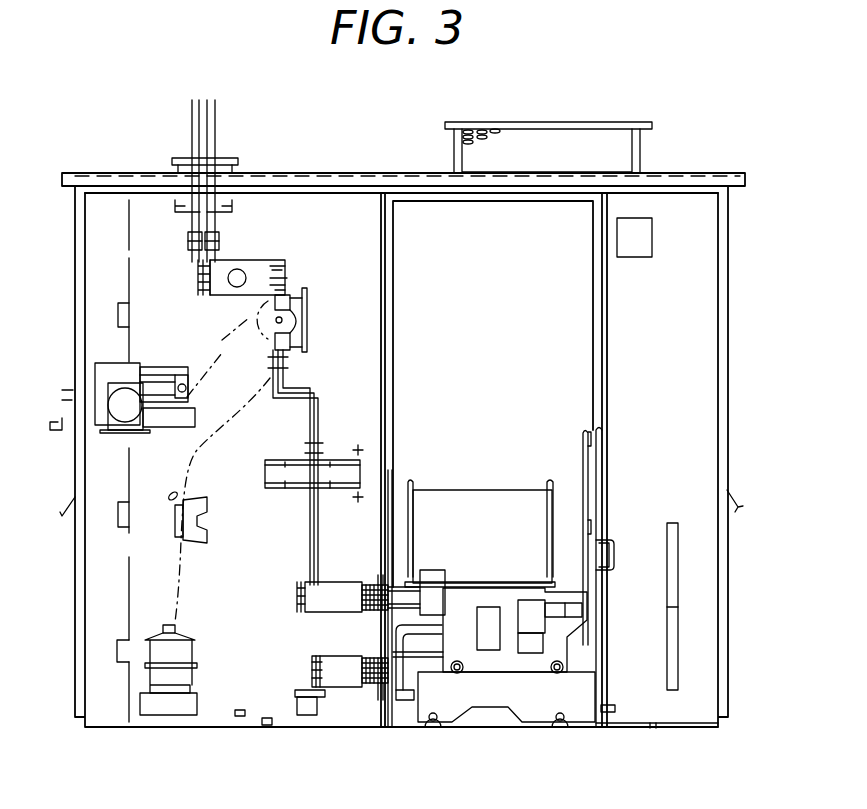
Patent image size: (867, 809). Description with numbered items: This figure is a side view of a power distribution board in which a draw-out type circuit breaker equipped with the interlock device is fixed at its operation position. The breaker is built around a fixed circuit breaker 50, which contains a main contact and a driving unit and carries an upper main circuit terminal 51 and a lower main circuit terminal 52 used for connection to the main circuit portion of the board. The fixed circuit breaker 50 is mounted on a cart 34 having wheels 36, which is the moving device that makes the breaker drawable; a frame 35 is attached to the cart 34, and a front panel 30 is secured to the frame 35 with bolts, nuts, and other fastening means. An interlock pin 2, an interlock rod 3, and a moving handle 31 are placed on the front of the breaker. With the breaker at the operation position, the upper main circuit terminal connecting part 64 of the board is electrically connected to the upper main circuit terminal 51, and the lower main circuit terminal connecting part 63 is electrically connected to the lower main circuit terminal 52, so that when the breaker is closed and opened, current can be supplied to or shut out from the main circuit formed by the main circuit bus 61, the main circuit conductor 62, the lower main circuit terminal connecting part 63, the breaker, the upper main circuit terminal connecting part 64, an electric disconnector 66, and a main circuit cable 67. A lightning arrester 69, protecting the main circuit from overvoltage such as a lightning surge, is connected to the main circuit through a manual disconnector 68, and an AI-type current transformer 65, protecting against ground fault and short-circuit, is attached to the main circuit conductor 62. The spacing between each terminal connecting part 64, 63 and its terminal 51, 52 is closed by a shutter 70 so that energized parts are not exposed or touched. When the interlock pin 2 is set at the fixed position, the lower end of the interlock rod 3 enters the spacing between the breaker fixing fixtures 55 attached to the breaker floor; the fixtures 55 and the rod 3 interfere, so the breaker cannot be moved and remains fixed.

The interlock pin 2 is at (601, 666).
The interlock rod 3 is at (590, 727).
The front panel 30 is at (602, 484).
The moving handle 31 is at (615, 540).
The cart 34 is at (497, 698).
The frame 35 is at (586, 636).
The wheels 36 is at (435, 727).
The fixed circuit breaker 50 is at (487, 498).
The upper main circuit terminal 51 is at (377, 575).
The lower main circuit terminal 52 is at (380, 686).
The breaker fixing fixtures 55 is at (632, 730).
The main circuit bus 61 is at (313, 672).
The main circuit conductor 62 is at (258, 263).
The lower main circuit terminal connecting part 63 is at (362, 660).
The upper main circuit terminal connecting part 64 is at (362, 583).
The AI-type current transformer 65 is at (322, 465).
The electric disconnector 66 is at (295, 297).
The main circuit cable 67 is at (215, 135).
The manual disconnector 68 is at (175, 522).
The lightning arrester 69 is at (183, 637).
The shutter 70 is at (392, 500).